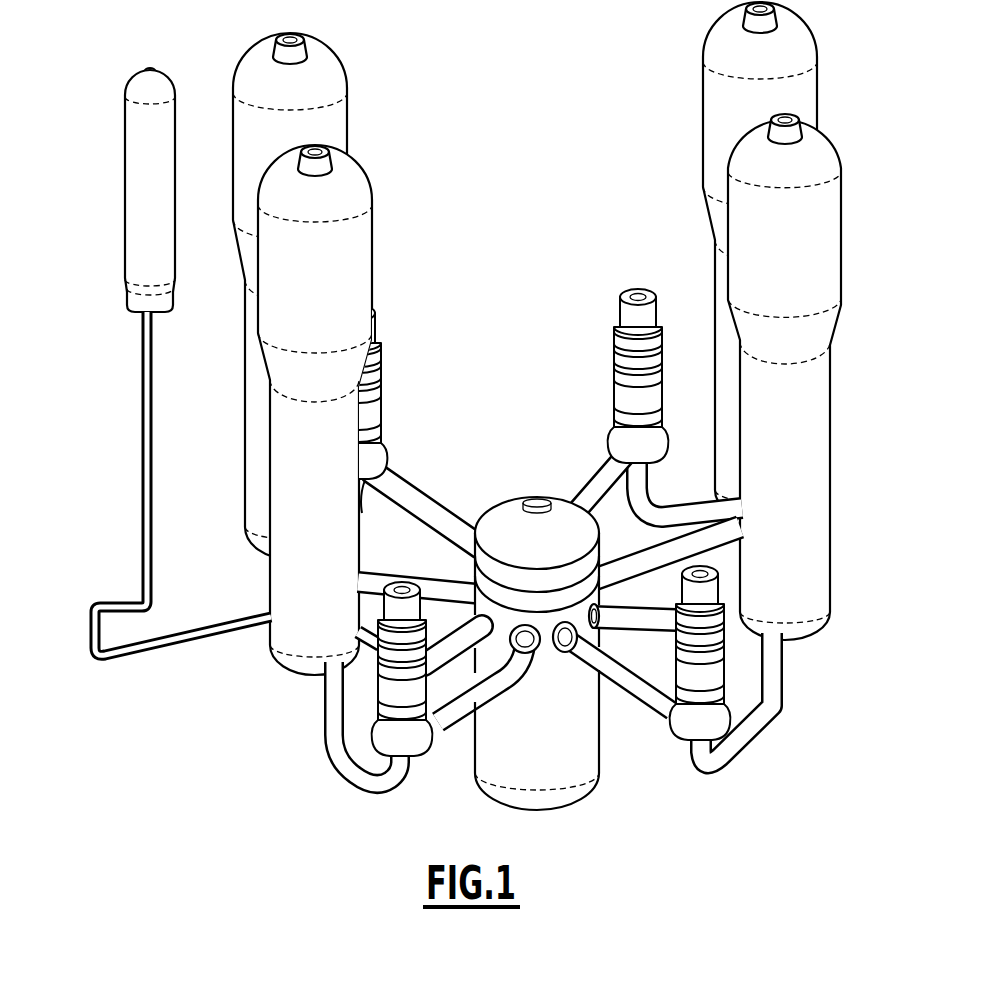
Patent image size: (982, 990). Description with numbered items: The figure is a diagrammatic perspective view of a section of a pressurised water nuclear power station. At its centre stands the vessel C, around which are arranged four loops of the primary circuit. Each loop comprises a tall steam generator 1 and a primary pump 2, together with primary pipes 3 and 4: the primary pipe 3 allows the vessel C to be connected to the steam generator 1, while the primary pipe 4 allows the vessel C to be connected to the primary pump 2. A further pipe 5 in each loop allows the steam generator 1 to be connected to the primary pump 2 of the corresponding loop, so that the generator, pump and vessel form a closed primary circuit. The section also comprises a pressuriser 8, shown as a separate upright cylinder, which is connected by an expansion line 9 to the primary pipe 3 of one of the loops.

The steam generator 1 is at (338, 119).
The primary pump 2 is at (381, 384).
The primary pipe 3 is at (373, 577).
The primary pipe 4 is at (402, 488).
The pipe 5 is at (647, 490).
The pressuriser 8 is at (130, 133).
The expansion line 9 is at (185, 643).
The vessel C is at (548, 767).